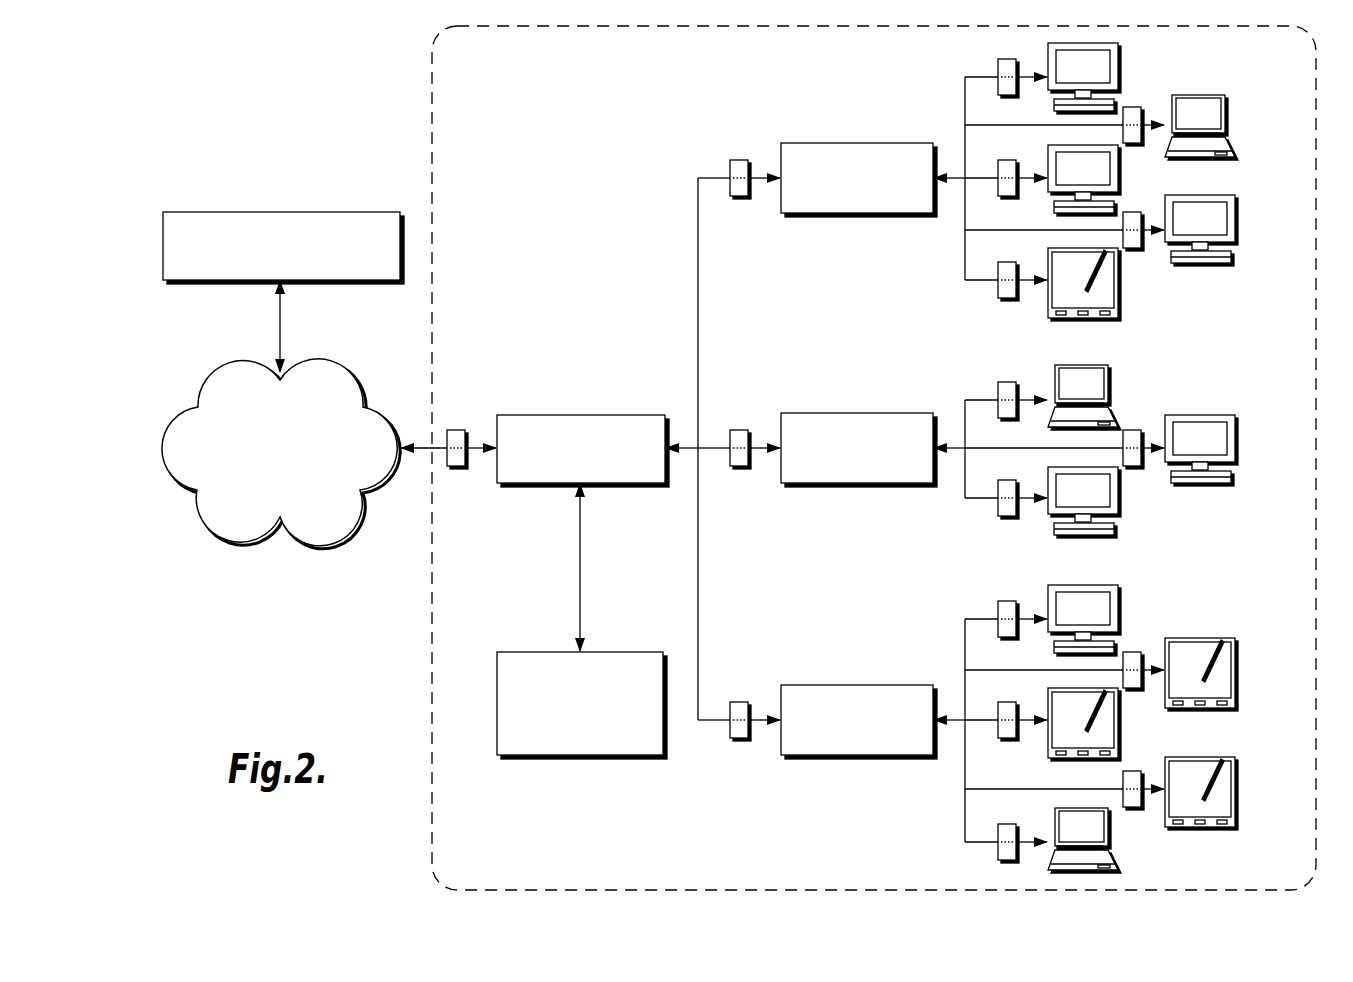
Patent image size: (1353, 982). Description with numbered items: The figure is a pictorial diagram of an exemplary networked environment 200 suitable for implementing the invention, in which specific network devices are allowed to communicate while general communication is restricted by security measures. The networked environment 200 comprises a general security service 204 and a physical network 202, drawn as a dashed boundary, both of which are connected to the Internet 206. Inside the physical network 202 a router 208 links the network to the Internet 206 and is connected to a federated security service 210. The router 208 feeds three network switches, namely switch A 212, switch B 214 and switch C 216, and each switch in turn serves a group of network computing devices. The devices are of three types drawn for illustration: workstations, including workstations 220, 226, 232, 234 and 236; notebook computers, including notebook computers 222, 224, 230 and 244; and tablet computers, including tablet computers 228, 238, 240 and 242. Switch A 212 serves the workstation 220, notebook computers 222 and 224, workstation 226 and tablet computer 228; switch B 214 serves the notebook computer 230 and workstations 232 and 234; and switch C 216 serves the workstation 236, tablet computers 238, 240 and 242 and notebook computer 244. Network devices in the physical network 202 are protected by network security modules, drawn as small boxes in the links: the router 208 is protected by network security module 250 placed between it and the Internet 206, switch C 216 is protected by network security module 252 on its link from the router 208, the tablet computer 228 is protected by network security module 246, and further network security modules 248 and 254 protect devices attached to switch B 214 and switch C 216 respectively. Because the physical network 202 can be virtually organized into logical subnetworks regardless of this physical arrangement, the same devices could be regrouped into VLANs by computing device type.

The networked environment 200 is at (230, 87).
The physical network 202 is at (432, 95).
The security service 204 is at (347, 212).
The Internet 206 is at (316, 372).
The router 208 is at (612, 415).
The federated security service 210 is at (612, 652).
The switch A 212 is at (832, 143).
The switch B 214 is at (832, 413).
The switch C 216 is at (832, 685).
The workstation 220 is at (1120, 73).
The notebook computer 222 is at (1237, 130).
The notebook computer 224 is at (1120, 175).
The workstation 226 is at (1237, 232).
The tablet computer 228 is at (1120, 276).
The notebook computer 230 is at (1120, 398).
The workstation 232 is at (1237, 450).
The workstation 234 is at (1120, 495).
The workstation 236 is at (1120, 616).
The tablet computer 238 is at (1237, 672).
The tablet computer 240 is at (1120, 719).
The tablet computer 242 is at (1237, 792).
The notebook computer 244 is at (1120, 840).
The network security module 246 is at (1006, 299).
The network security module 248 is at (1006, 517).
The network security module 250 is at (456, 430).
The network security module 252 is at (738, 741).
The network security module 254 is at (1006, 601).